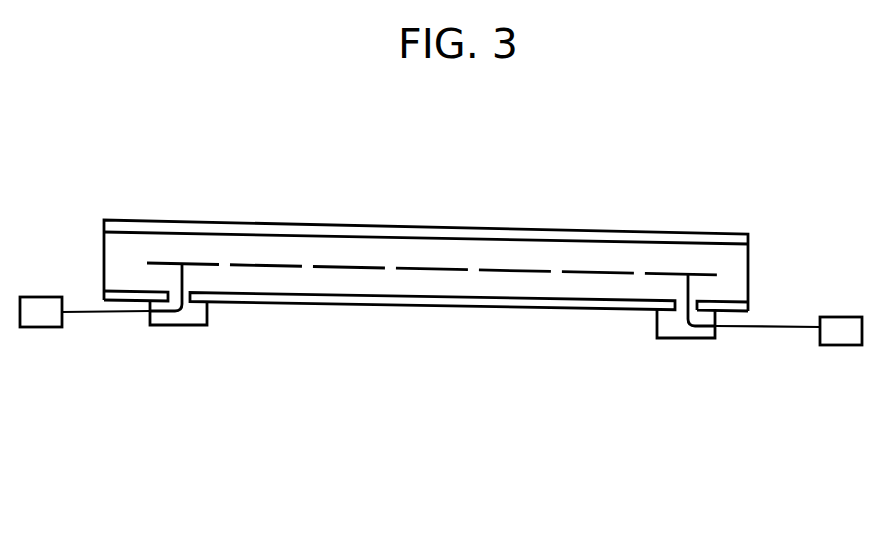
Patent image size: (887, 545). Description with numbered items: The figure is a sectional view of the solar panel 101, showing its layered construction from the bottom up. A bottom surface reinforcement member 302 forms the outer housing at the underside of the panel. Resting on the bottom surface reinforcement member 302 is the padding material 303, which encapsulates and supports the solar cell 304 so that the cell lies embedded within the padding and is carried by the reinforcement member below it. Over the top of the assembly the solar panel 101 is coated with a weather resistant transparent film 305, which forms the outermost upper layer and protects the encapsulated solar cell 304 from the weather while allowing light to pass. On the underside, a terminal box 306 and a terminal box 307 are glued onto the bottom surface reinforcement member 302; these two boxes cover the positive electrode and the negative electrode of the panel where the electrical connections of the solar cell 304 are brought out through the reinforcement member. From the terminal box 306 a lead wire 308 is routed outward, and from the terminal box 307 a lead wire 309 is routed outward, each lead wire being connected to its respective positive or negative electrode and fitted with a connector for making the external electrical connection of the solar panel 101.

The solar panel 101 is at (397, 194).
The bottom surface reinforcement member 302 is at (735, 307).
The padding material 303 is at (737, 260).
The solar cell 304 is at (523, 270).
The weather resistant transparent film 305 is at (658, 233).
The terminal box 306 is at (193, 317).
The terminal box 307 is at (670, 332).
The lead wire 308 is at (88, 312).
The lead wire 309 is at (755, 327).